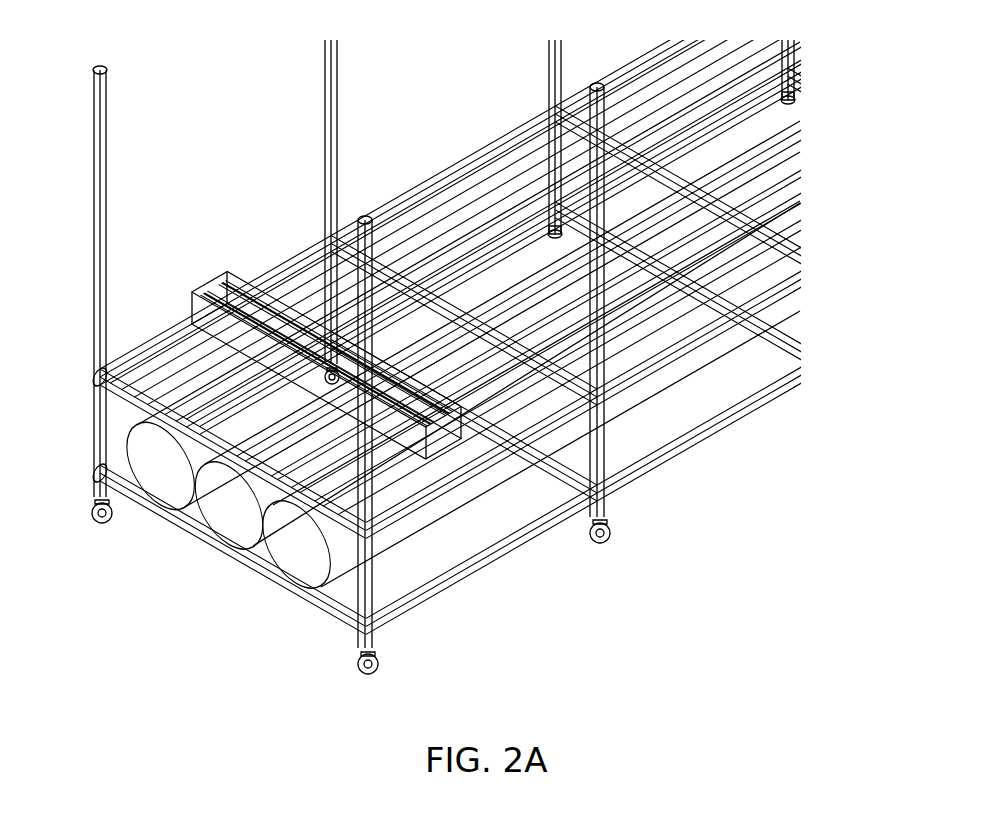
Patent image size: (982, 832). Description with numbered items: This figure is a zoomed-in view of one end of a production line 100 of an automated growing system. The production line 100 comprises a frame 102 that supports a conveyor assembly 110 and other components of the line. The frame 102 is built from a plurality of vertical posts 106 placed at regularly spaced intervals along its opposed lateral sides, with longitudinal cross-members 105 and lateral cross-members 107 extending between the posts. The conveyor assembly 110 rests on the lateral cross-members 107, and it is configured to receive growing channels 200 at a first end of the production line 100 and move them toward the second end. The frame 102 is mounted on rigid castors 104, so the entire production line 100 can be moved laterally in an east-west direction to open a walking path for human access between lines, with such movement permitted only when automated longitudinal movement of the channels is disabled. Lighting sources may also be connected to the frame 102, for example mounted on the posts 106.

The production line 100 is at (101, 609).
The frame 102 is at (712, 494).
The rigid castors 104 is at (602, 537).
The longitudinal cross-members 105 is at (476, 568).
The vertical posts 106 is at (100, 97).
The lateral cross-members 107 is at (443, 296).
The conveyor assembly 110 is at (197, 355).
The growing channels 200 is at (213, 255).